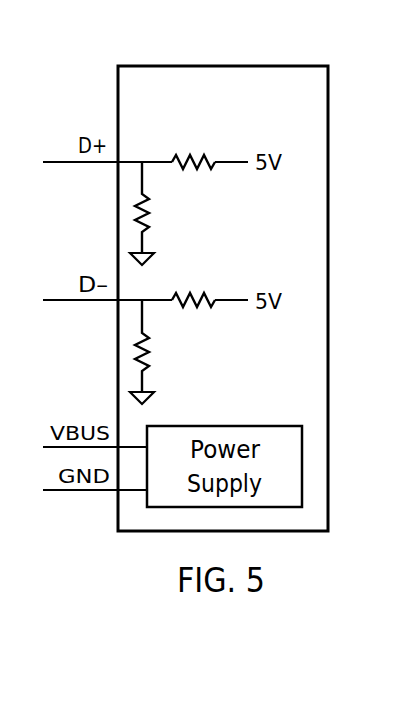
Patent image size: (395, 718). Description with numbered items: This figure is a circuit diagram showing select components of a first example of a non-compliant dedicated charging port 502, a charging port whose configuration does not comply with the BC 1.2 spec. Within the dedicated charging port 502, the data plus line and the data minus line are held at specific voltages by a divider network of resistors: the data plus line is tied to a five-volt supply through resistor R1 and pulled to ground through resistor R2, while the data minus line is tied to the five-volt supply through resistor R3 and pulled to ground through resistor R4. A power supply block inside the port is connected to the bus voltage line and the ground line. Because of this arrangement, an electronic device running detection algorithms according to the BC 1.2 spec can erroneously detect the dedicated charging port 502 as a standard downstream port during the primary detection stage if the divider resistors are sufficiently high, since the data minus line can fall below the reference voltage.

The non-compliant dedicated charging port (DCP) 502 is at (264, 66).
The resistor R1 is at (193, 176).
The resistor R2 is at (156, 213).
The resistor R3 is at (193, 315).
The resistor R4 is at (156, 352).